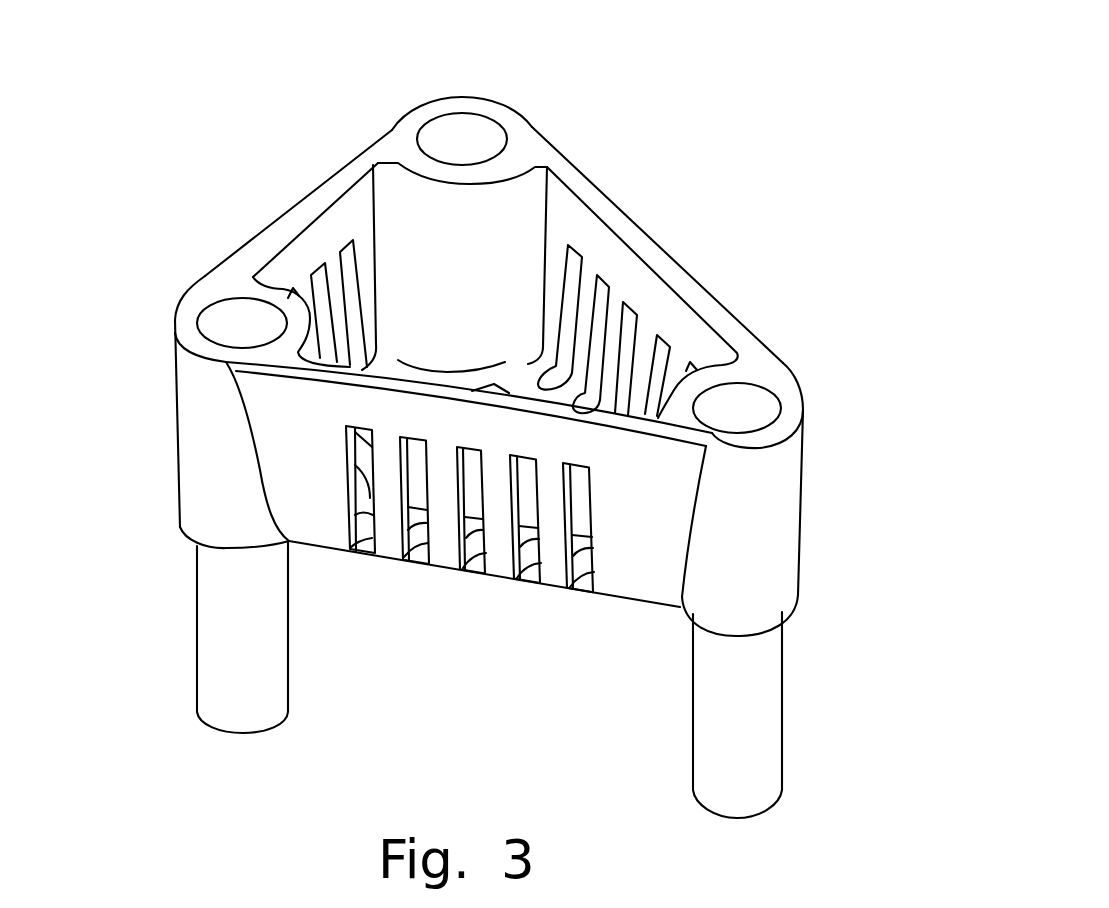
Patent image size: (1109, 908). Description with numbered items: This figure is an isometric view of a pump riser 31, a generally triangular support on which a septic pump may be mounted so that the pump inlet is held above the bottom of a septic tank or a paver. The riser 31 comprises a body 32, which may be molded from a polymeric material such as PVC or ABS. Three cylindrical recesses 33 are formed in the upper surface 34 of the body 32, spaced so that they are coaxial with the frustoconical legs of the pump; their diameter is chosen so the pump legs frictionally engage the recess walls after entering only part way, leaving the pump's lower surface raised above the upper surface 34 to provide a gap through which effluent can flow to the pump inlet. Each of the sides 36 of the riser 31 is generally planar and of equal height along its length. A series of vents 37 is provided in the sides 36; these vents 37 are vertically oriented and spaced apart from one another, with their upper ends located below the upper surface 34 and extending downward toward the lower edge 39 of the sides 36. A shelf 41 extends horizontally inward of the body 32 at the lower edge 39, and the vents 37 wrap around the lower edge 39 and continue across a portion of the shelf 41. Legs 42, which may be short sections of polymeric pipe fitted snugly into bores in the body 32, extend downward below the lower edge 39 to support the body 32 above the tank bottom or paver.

The pump riser 31 is at (807, 456).
The body 32 is at (765, 523).
The recesses 33 is at (463, 134).
The upper surface 34 is at (613, 220).
The sides 36 is at (358, 204).
The vents 37 is at (352, 275).
The lower edge 39 is at (327, 547).
The shelf 41 is at (473, 523).
The legs 42 is at (258, 632).